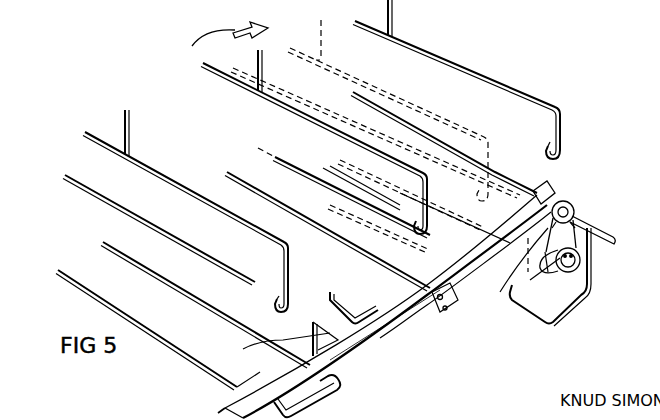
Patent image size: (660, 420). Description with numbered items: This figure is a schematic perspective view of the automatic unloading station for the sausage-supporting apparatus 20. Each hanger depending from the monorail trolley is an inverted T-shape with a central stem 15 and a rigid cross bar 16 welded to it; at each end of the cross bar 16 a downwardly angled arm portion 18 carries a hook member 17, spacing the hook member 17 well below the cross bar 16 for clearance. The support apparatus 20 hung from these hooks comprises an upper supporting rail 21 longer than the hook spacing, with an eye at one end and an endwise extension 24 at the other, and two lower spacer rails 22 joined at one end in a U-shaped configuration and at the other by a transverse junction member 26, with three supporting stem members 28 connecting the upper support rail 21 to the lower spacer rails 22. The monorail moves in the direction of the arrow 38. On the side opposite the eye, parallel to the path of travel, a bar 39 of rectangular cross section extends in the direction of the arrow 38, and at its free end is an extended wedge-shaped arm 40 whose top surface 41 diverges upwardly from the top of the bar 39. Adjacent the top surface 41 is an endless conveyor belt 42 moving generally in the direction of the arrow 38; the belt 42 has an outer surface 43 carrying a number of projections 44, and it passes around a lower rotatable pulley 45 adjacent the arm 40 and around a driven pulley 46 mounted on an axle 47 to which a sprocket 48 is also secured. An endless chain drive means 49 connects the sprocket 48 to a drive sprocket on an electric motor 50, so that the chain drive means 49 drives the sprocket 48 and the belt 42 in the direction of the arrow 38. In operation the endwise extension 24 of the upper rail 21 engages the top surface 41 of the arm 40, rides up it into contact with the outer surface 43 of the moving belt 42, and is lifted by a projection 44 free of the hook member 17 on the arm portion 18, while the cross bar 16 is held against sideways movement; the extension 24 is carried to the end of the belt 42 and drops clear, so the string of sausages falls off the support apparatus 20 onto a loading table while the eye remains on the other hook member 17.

The central stem 15 is at (393, 22).
The cross bar 16 is at (455, 56).
The hook member 17 is at (547, 144).
The arm portion 18 is at (564, 117).
The sausage-supporting apparatus 20 is at (203, 373).
The upper supporting rail 21 is at (407, 115).
The lower spacer rails 22 is at (165, 278).
The endwise extension 24 is at (605, 240).
The transverse junction member 26 is at (340, 393).
The supporting stem members 28 is at (252, 345).
The arrow 38 is at (218, 42).
The bar 39 is at (228, 385).
The wedge-shaped arm 40 is at (388, 306).
The top surface 41 is at (425, 296).
The endless conveyor belt 42 is at (543, 191).
The outer surface 43 is at (500, 292).
The projections 44 is at (556, 198).
The lower rotatable pulley 45 is at (445, 318).
The driven pulley 46 is at (595, 296).
The axle 47 is at (574, 215).
The sprocket 48 is at (574, 211).
The endless chain drive means 49 is at (580, 266).
The electric motor 50 is at (545, 312).